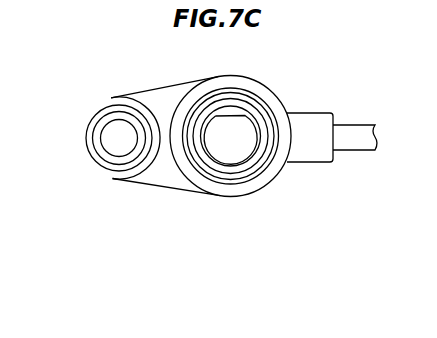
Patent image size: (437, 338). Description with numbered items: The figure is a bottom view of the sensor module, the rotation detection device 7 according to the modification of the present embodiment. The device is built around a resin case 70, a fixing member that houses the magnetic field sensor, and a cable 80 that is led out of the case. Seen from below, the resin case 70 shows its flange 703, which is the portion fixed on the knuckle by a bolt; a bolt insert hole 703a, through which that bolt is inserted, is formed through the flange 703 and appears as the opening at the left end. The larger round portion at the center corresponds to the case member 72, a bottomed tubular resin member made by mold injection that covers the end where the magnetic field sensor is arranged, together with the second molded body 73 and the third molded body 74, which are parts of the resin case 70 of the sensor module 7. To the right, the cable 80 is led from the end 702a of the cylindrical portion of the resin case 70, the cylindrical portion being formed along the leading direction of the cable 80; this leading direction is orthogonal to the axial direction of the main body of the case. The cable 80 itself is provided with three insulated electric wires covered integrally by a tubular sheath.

The rotation detection device 7 is at (341, 50).
The resin case 70 is at (280, 76).
The case member 72 is at (240, 155).
The second molded body 73 is at (222, 172).
The third molded body 74 is at (192, 178).
The cable 80 is at (361, 135).
The end of the cylindrical portion 702a is at (346, 112).
The flange 703 is at (135, 76).
The bolt insert hole 703a is at (113, 119).